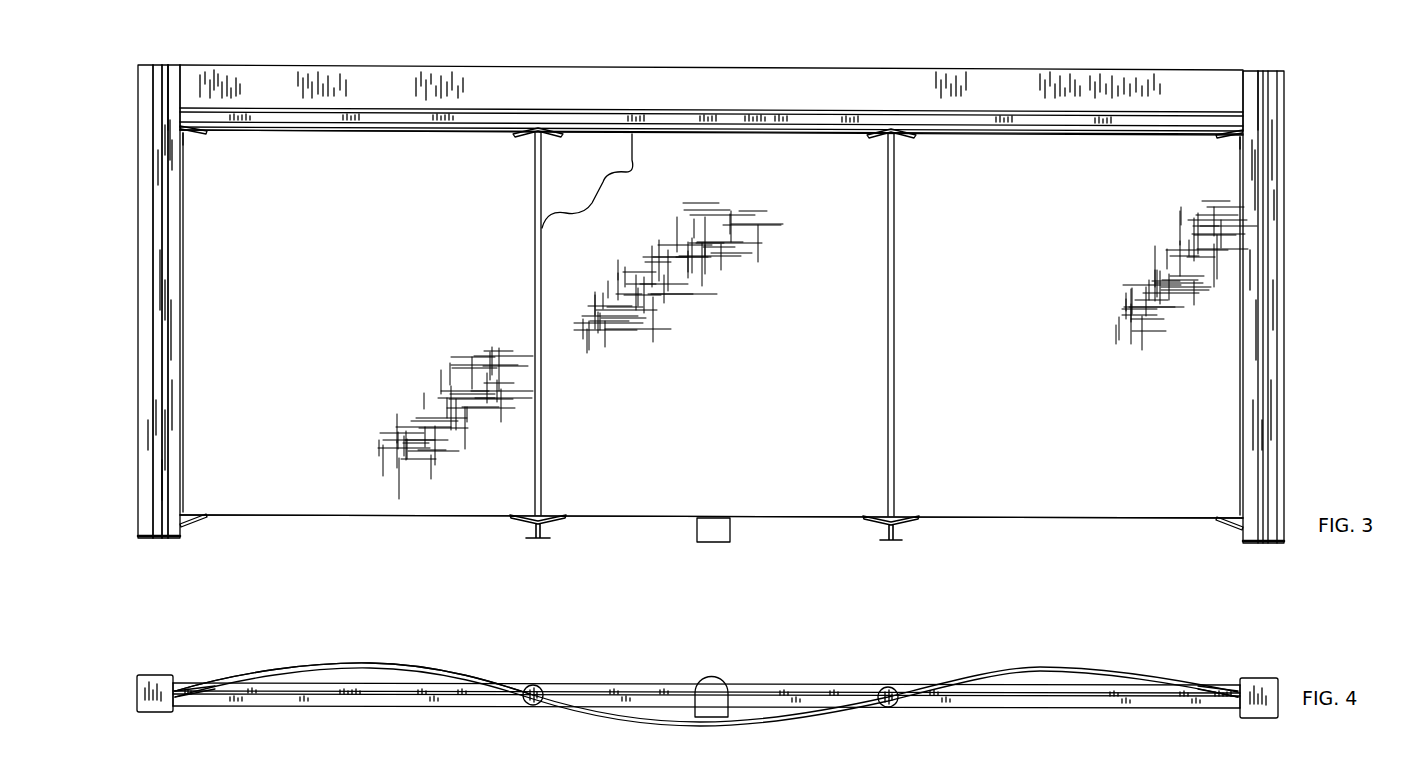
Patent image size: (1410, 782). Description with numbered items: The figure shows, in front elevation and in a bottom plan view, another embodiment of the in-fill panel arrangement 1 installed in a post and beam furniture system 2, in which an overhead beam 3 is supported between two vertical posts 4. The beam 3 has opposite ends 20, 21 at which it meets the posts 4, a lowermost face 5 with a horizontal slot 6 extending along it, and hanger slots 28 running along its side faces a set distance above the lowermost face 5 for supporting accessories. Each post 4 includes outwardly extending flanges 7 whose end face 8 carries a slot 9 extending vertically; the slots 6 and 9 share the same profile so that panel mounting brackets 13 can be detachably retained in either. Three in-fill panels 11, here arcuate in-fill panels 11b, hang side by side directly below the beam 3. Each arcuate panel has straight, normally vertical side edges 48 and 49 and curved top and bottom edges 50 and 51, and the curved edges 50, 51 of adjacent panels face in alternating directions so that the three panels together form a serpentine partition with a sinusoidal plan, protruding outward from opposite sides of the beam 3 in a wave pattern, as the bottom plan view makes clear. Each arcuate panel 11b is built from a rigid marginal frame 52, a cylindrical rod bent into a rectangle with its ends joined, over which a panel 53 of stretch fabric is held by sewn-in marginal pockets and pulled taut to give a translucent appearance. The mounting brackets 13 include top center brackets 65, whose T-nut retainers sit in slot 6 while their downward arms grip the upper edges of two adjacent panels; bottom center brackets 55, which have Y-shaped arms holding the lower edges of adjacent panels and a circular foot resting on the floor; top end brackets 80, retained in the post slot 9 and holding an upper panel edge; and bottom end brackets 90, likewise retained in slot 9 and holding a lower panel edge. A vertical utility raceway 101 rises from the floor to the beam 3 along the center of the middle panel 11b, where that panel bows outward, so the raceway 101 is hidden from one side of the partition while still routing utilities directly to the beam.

In FIG. 3, the in-fill panel arrangement 1 is at (267, 548).
In FIG. 3, the post and beam furniture system 2 is at (1298, 70).
In FIG. 3, the overhead beam 3 is at (1143, 80).
In FIG. 4, the overhead beam 3 is at (405, 709).
In FIG. 3, the vertical post 4 is at (150, 401).
In FIG. 4, the vertical post 4 is at (152, 680).
In FIG. 3, the lowermost face 5 is at (298, 133).
In FIG. 4, the lowermost face 5 is at (985, 716).
In FIG. 4, the horizontal slot 6 is at (1028, 708).
In FIG. 3, the flange 7 is at (157, 315).
In FIG. 3, the end face 8 is at (160, 202).
In FIG. 3, the slot 9 is at (163, 246).
In FIG. 3, the in-fill panel 11 is at (712, 338).
In FIG. 3, the arcuate in-fill panel 11b is at (318, 518).
In FIG. 4, the arcuate in-fill panel 11b is at (338, 664).
In FIG. 3, the panel mounting bracket 13 is at (877, 118).
In FIG. 3, the beam end 20 is at (180, 86).
In FIG. 4, the beam end 20 is at (197, 702).
In FIG. 3, the beam end 21 is at (1248, 92).
In FIG. 4, the beam end 21 is at (1222, 709).
In FIG. 3, the hanger slot 28 is at (498, 110).
In FIG. 3, the side edge 48 is at (184, 228).
In FIG. 3, the side edge 49 is at (533, 482).
In FIG. 3, the curved top edge 50 is at (391, 134).
In FIG. 3, the curved bottom edge 51 is at (247, 513).
In FIG. 4, the curved bottom edge 51 is at (415, 667).
In FIG. 3, the marginal frame 52 is at (588, 158).
In FIG. 3, the panel of flexible material 53 is at (687, 158).
In FIG. 3, the bottom center bracket 55 is at (528, 531).
In FIG. 4, the bottom center bracket 55 is at (537, 685).
In FIG. 3, the top center bracket 65 is at (516, 137).
In FIG. 3, the top end bracket 80 is at (194, 135).
In FIG. 3, the bottom end bracket 90 is at (192, 526).
In FIG. 4, the bottom end bracket 90 is at (193, 687).
In FIG. 3, the vertical utility raceway 101 is at (733, 524).
In FIG. 4, the vertical utility raceway 101 is at (710, 678).